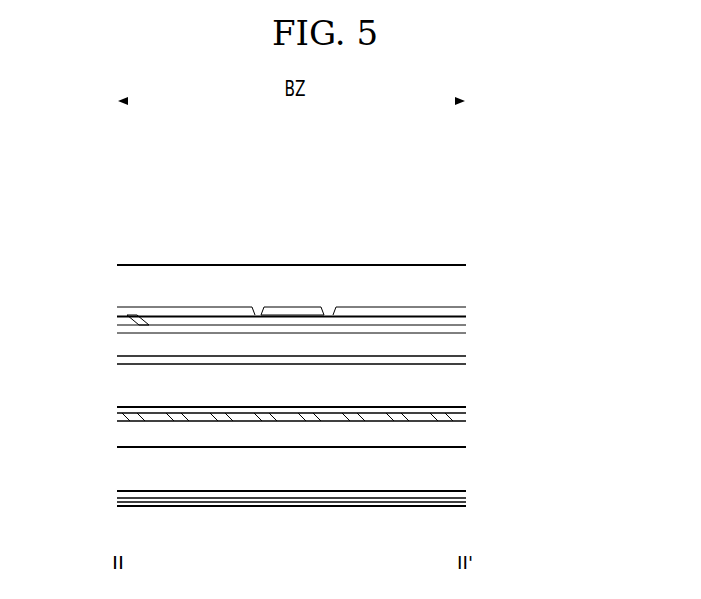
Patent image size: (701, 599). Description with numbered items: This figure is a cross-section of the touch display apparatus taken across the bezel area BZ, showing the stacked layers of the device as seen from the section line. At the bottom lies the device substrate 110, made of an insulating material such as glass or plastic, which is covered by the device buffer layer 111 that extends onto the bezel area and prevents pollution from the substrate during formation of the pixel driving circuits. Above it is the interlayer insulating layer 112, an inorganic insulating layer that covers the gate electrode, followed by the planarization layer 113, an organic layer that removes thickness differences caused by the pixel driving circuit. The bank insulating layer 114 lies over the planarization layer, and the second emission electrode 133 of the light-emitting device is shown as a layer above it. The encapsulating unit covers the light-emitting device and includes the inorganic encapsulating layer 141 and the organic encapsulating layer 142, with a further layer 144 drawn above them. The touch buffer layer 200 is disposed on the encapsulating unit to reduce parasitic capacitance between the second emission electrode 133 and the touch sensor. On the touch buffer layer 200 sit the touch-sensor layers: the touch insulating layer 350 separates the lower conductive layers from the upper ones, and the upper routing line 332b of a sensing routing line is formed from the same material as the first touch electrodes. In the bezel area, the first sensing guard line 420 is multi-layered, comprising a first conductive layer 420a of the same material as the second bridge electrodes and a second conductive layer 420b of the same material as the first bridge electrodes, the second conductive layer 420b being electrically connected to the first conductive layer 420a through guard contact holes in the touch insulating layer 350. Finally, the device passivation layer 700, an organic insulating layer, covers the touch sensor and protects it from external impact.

The device passivation layer 700 is at (127, 286).
The first sensing guard line 420 is at (350, 315).
The first conductive layer 420a is at (466, 327).
The second conductive layer 420b is at (466, 311).
The touch buffer layer 200 is at (127, 342).
The insulating layer 144 is at (460, 360).
The organic encapsulating layer 142 is at (127, 379).
The inorganic encapsulating layer 141 is at (460, 408).
The second emission electrode 133 is at (127, 417).
The bank insulating layer 114 is at (460, 432).
The planarization layer 113 is at (127, 467).
The interlayer insulating layer 112 is at (460, 497).
The device buffer layer 111 is at (127, 500).
The device substrate 110 is at (460, 519).
The touch insulating layer 350 is at (203, 318).
The upper routing line 332b is at (280, 318).